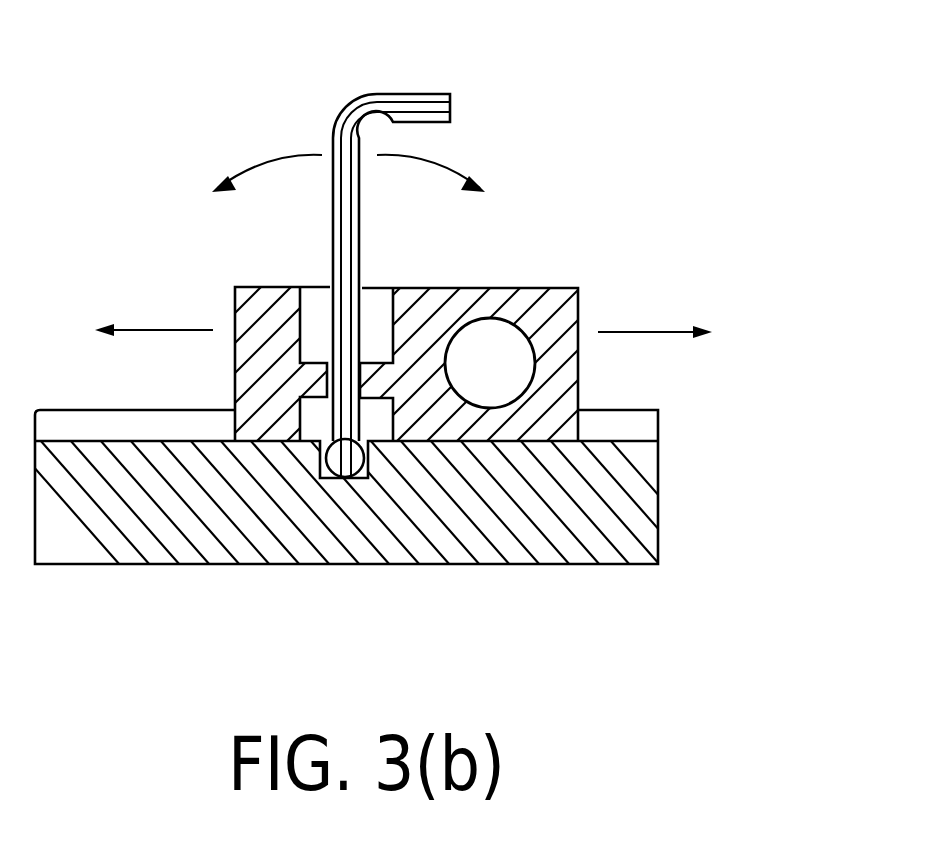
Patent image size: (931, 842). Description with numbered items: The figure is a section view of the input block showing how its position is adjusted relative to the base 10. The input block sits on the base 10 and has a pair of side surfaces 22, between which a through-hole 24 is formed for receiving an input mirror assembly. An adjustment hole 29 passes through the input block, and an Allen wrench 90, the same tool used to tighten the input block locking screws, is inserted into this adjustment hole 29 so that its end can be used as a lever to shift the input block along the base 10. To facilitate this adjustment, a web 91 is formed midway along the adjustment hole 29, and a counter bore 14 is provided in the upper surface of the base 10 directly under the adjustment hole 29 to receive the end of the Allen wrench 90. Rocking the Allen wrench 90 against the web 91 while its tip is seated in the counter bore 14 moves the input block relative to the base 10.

The base 10 is at (645, 410).
The counter bore 14 is at (345, 478).
The side surfaces 22 is at (518, 288).
The through-hole 24 is at (535, 367).
The adjustment hole 29 is at (318, 287).
The Allen wrench 90 is at (413, 94).
The web 91 is at (368, 385).